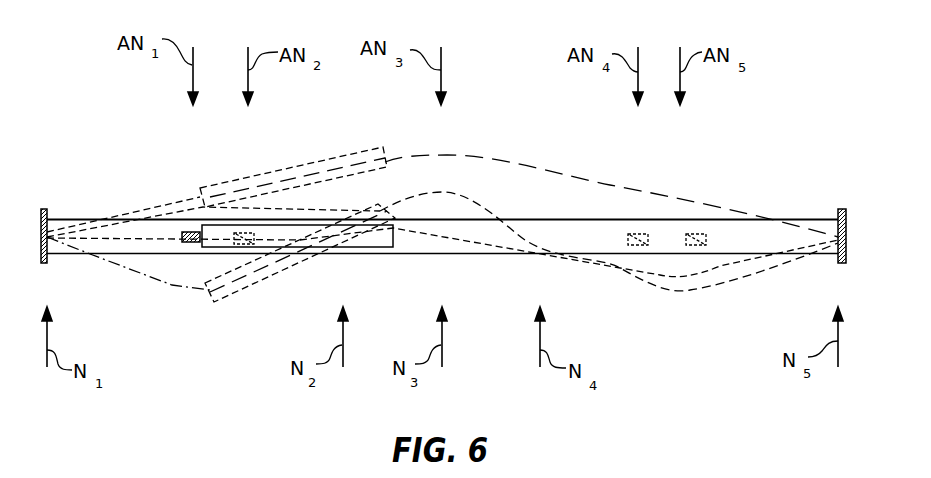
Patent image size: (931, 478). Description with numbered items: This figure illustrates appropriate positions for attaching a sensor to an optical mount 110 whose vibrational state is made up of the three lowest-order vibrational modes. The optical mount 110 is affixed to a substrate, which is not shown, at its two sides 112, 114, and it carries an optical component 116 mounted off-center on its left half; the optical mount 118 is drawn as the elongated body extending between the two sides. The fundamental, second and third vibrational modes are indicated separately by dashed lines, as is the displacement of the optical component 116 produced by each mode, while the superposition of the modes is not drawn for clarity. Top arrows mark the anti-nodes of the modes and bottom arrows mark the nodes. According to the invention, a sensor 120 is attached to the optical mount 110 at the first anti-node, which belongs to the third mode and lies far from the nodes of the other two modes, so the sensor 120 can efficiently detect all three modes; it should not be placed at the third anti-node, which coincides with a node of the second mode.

The optical mount 110 is at (91, 81).
The side of optical mount 112 is at (58, 218).
The side of optical mount 114 is at (842, 209).
The optical component 116 is at (203, 227).
The light guide 118 is at (83, 218).
The sensor 120 is at (182, 238).